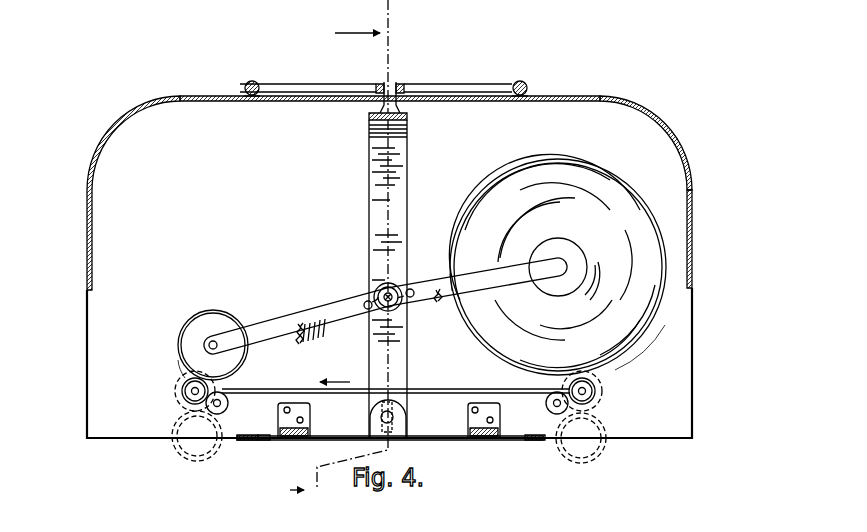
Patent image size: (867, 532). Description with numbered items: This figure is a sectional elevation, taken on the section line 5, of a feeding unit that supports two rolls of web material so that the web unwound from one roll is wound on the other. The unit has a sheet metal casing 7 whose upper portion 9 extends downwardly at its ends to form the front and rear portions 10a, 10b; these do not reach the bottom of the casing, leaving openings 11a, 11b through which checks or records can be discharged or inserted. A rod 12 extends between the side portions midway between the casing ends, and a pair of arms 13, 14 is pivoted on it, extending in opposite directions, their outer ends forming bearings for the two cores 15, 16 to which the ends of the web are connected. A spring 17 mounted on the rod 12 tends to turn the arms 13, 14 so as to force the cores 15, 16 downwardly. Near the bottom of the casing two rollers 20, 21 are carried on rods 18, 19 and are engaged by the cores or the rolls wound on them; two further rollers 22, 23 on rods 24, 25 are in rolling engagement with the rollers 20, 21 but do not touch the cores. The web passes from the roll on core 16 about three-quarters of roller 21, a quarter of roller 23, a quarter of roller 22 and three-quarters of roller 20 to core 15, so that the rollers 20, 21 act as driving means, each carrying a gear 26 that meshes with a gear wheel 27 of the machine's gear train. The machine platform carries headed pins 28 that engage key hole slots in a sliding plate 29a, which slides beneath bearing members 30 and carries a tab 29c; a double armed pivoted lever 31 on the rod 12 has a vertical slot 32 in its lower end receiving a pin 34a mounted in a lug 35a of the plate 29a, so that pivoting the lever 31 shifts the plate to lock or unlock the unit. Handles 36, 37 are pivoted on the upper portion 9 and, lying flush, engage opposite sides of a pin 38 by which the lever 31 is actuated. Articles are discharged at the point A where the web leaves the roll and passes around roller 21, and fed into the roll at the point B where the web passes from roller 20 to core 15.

The section line 5- 5 is at (340, 257).
The sheet metal casing 7 is at (672, 133).
The upper portion 9 is at (165, 98).
The front portion 10a is at (83, 250).
The rear portion 10b is at (693, 277).
The opening 11a is at (90, 400).
The opening 11b is at (690, 350).
The rod 12 is at (397, 302).
The arm 13 is at (263, 327).
The arm 14 is at (465, 282).
The core 15 is at (200, 323).
The core 16 is at (563, 240).
The spring 17 is at (378, 287).
The rod 18 is at (192, 392).
The rod 19 is at (597, 395).
The roller 20 is at (187, 383).
The roller 21 is at (597, 385).
The roller 22 is at (223, 413).
The roller 23 is at (547, 415).
The rod 24 is at (223, 403).
The rod 25 is at (175, 408).
The gear 26 is at (600, 408).
The gear wheel 27 is at (177, 458).
The headed pin 28 is at (255, 440).
The sliding plate 29a is at (320, 438).
The base plate tab 29c is at (247, 440).
The bearing member 30 is at (313, 433).
The double armed pivoted lever 31 is at (368, 115).
The vertical slot 32 is at (372, 405).
The pin 34a is at (393, 421).
The lug 35a is at (392, 415).
The handle 36 is at (293, 88).
The handle 37 is at (442, 85).
The pin 38 is at (393, 85).
The point A is at (620, 365).
The point B is at (185, 378).